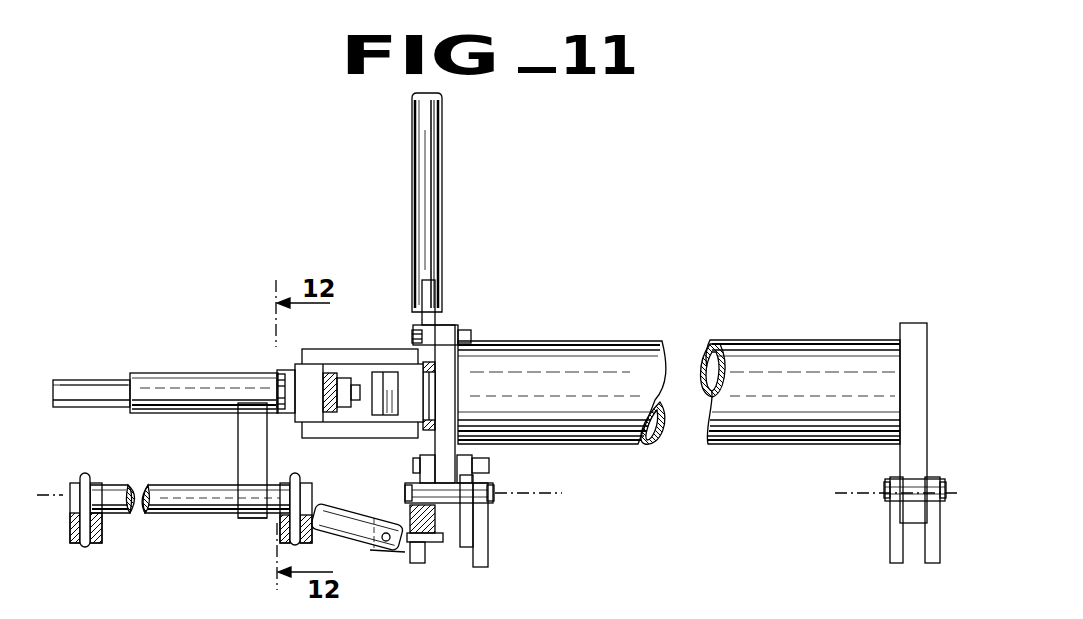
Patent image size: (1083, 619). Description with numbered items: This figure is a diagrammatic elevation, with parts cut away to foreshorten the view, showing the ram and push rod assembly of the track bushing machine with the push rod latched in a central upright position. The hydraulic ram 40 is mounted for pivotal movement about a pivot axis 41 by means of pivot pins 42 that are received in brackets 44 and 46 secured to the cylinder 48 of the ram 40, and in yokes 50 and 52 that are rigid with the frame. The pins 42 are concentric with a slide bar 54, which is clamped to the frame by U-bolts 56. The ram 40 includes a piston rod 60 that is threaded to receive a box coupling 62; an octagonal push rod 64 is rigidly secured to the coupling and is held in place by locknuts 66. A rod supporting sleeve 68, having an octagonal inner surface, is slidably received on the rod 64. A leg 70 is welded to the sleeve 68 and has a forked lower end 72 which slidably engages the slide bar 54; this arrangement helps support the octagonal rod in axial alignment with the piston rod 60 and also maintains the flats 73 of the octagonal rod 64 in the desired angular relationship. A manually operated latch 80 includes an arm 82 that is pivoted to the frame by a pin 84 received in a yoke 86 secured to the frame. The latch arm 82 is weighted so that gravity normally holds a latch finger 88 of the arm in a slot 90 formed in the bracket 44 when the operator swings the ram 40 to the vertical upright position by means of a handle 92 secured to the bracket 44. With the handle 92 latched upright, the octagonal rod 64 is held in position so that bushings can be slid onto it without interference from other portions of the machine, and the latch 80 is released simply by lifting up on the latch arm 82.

The hydraulic ram 40 is at (620, 324).
The pivot axis 41 is at (556, 492).
The pivot pins 42 is at (887, 500).
The bracket 44 is at (452, 385).
The bracket 46 is at (907, 377).
The cylinder 48 is at (717, 342).
The yoke 50 is at (486, 552).
The yoke 52 is at (898, 540).
The slide bar 54 is at (173, 517).
The U-bolts 56 is at (88, 473).
The piston rod 60 is at (383, 370).
The box coupling 62 is at (360, 350).
The octagonal push rod 64 is at (90, 380).
The locknuts 66 is at (345, 380).
The rod supporting sleeve 68 is at (175, 373).
The leg 70 is at (238, 427).
The forked lower end 72 is at (252, 517).
The flats 73 is at (108, 395).
The manually operated latch 80 is at (357, 512).
The latch arm 82 is at (333, 525).
The pin 84 is at (385, 532).
The yoke 86 is at (377, 550).
The latch finger 88 is at (440, 540).
The slot 90 is at (416, 563).
The handle 92 is at (443, 181).